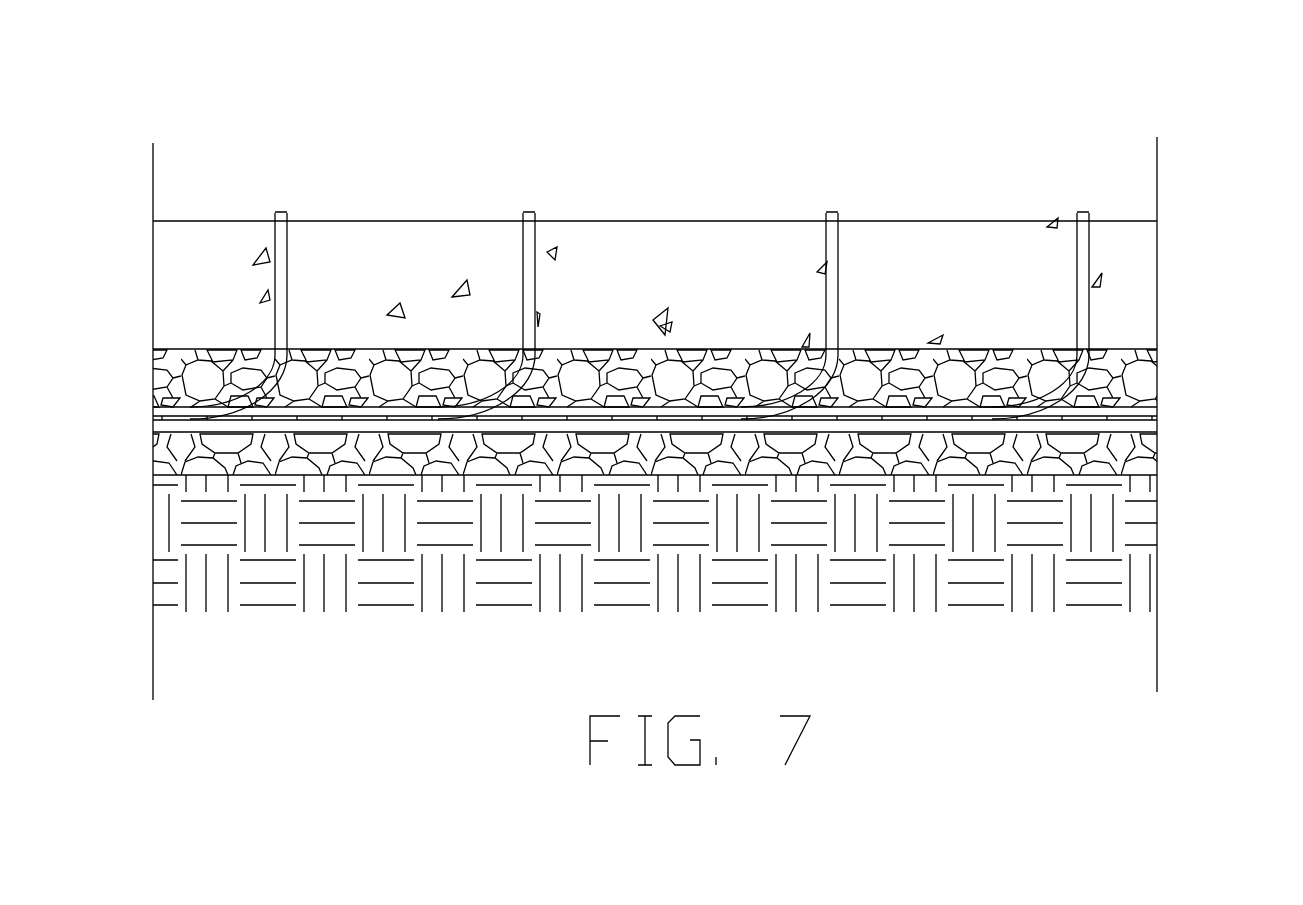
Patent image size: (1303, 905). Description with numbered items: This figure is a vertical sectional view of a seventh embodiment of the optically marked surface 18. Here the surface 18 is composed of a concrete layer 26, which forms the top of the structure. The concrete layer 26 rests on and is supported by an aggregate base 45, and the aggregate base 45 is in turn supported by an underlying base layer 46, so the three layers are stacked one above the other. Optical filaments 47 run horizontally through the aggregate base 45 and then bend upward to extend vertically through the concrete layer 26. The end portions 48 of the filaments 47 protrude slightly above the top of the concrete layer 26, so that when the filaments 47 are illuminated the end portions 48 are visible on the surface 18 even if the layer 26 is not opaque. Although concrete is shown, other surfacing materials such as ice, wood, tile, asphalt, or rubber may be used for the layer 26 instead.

The surface 18 is at (950, 135).
The concrete layer 26 is at (1150, 278).
The aggregate base 45 is at (1160, 400).
The base layer 46 is at (1160, 530).
The optical filaments 47 is at (453, 672).
The end portions 48 is at (1075, 213).